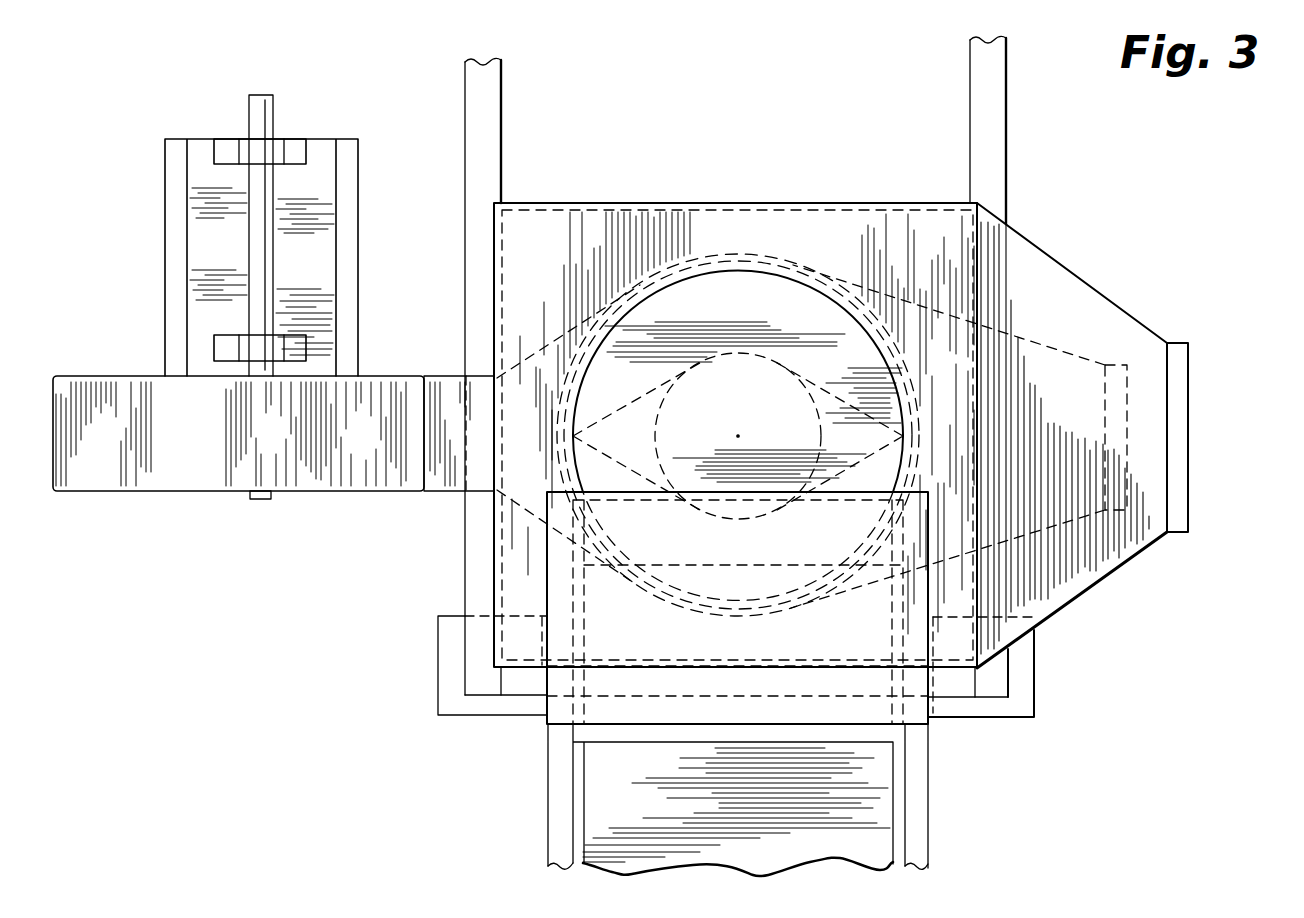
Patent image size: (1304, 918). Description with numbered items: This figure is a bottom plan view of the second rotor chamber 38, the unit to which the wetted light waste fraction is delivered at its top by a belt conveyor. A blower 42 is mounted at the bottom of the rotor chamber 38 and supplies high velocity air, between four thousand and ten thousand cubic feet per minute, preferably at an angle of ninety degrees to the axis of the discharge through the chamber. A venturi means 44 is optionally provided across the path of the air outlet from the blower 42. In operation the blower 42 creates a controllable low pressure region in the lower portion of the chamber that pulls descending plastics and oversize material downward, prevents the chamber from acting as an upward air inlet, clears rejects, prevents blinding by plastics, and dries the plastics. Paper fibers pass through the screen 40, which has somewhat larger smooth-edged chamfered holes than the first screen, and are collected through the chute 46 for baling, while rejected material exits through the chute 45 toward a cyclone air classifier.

The rotor chamber 38 is at (827, 183).
The screen 40 is at (444, 378).
The blower 42 is at (181, 480).
The venturi means 44 is at (697, 363).
The chute 45 is at (1128, 445).
The chute 46 is at (1188, 387).